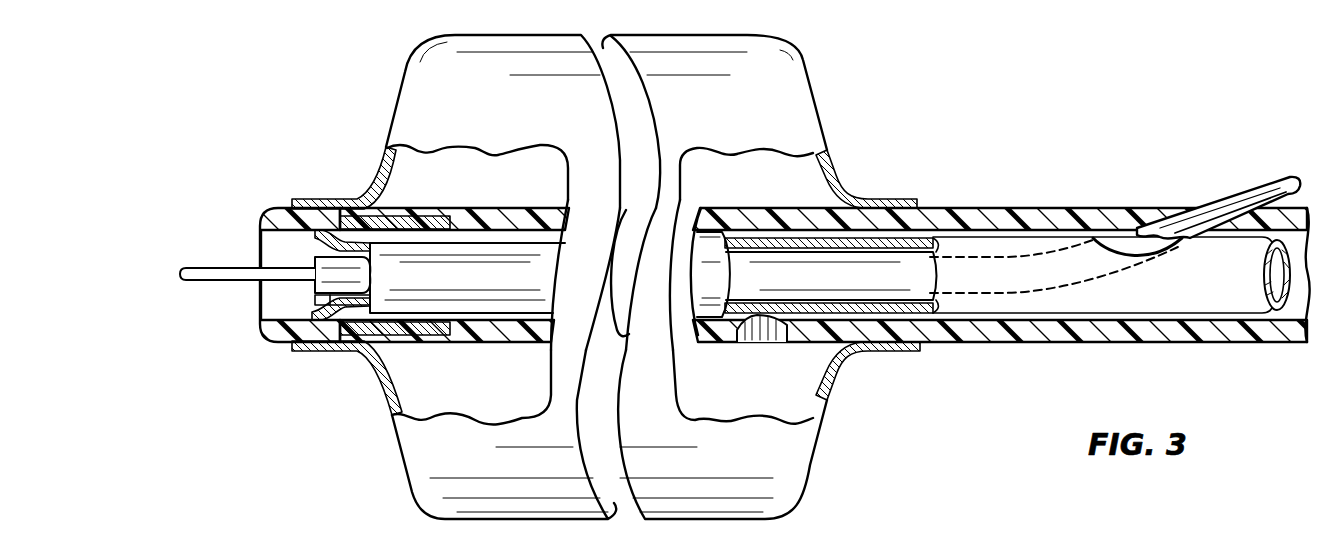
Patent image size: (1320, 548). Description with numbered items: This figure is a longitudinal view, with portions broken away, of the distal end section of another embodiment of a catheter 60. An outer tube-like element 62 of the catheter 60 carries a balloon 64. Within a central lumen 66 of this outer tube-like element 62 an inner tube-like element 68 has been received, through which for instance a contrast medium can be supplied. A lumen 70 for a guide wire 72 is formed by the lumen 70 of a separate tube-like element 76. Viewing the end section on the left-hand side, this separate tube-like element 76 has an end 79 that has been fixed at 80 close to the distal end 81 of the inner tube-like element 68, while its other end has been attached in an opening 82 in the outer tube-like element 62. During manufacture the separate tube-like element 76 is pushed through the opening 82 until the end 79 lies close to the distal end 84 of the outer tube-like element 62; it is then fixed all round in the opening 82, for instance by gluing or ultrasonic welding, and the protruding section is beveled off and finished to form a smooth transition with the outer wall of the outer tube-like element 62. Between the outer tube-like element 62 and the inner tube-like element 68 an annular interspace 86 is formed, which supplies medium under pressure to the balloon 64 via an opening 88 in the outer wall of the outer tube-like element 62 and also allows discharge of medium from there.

The catheter 60 is at (1095, 150).
The outer tube-like element 62 is at (963, 218).
The balloon 64 is at (783, 88).
The central lumen 66 is at (1050, 235).
The inner tube-like element 68 is at (410, 280).
The lumen 70 is at (1185, 212).
The guide wire 72 is at (213, 278).
The separate tube-like element 76 is at (1203, 245).
The end 79 is at (320, 286).
The fixing location 80 is at (328, 302).
The distal end 81 is at (323, 246).
The opening 82 is at (1253, 190).
The distal end 84 is at (278, 213).
The annular interspace 86 is at (913, 320).
The opening 88 is at (760, 340).